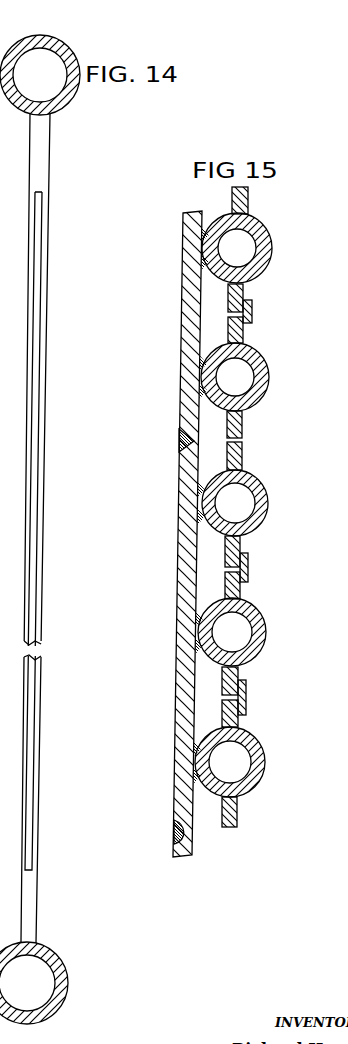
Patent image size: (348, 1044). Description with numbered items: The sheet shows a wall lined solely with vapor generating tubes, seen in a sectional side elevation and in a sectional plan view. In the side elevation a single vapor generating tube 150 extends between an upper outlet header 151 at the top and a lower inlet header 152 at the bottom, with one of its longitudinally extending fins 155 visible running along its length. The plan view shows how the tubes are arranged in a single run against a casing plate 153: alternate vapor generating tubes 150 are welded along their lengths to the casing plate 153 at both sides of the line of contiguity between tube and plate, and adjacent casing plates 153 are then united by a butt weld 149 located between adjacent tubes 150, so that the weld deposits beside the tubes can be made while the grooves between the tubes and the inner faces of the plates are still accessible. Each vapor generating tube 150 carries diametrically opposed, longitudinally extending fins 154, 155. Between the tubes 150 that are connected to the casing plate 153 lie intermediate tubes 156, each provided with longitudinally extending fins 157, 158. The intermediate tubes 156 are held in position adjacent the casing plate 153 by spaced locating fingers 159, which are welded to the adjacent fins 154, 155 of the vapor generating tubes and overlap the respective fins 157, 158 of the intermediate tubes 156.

In FIG. 15, the butt weld 149 is at (178, 440).
In FIG. 14, the vapor generating tube 150 is at (42, 165).
In FIG. 15, the vapor generating tube 150 is at (267, 374).
In FIG. 14, the upper outlet header 151 is at (72, 91).
In FIG. 14, the lower inlet header 152 is at (58, 958).
In FIG. 15, the casing plate 153 is at (182, 551).
In FIG. 15, the longitudinally extending fin 154 is at (240, 330).
In FIG. 14, the longitudinally extending fin 155 is at (43, 361).
In FIG. 15, the longitudinally extending fin 155 is at (242, 428).
In FIG. 15, the intermediate tube 156 is at (263, 247).
In FIG. 15, the longitudinally extending fin 157 is at (245, 295).
In FIG. 15, the longitudinally extending fin 158 is at (242, 198).
In FIG. 15, the locating finger 159 is at (252, 312).